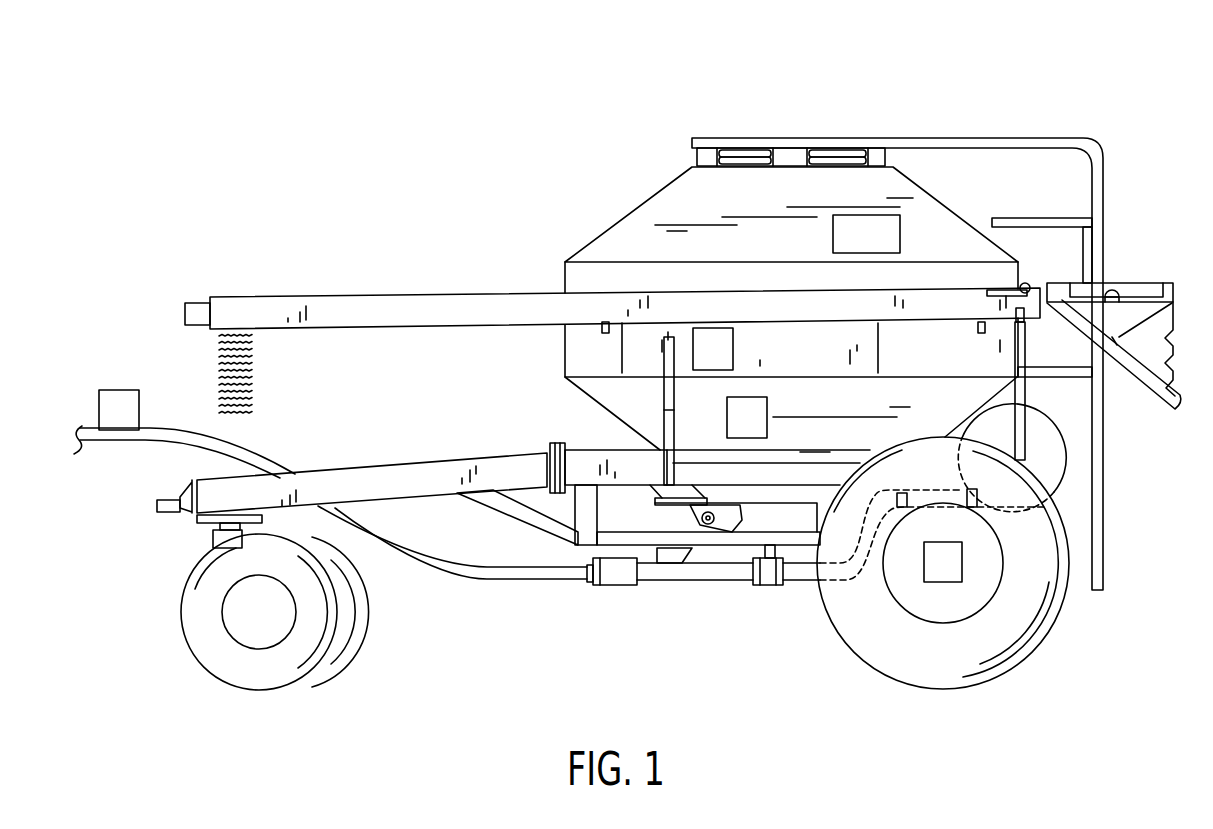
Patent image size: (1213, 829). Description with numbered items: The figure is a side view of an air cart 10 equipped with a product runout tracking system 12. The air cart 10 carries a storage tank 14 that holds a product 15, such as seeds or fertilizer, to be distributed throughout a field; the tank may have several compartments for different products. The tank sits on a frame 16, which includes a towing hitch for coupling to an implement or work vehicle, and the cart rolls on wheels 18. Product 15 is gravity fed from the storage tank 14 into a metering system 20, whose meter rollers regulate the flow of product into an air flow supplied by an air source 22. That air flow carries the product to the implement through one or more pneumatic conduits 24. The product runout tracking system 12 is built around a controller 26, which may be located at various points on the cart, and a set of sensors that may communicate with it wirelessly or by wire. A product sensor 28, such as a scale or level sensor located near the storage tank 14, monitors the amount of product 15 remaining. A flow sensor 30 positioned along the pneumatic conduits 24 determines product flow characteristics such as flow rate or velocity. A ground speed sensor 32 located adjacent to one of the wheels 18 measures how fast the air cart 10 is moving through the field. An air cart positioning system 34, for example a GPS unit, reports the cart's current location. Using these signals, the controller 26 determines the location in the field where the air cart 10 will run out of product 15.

The air cart 10 is at (654, 116).
The product runout tracking system 12 is at (550, 279).
The storage tank 14 is at (680, 197).
The product 15 is at (773, 243).
The frame 16 is at (366, 468).
The wheels 18 is at (205, 665).
The metering system 20 is at (735, 510).
The air source 22 is at (1047, 447).
The pneumatic conduits 24 is at (474, 567).
The controller 26 is at (733, 350).
The product sensor 28 is at (767, 405).
The flow sensor 30 is at (118, 390).
The ground speed sensor 32 is at (943, 583).
The air cart positioning system 34 is at (902, 233).